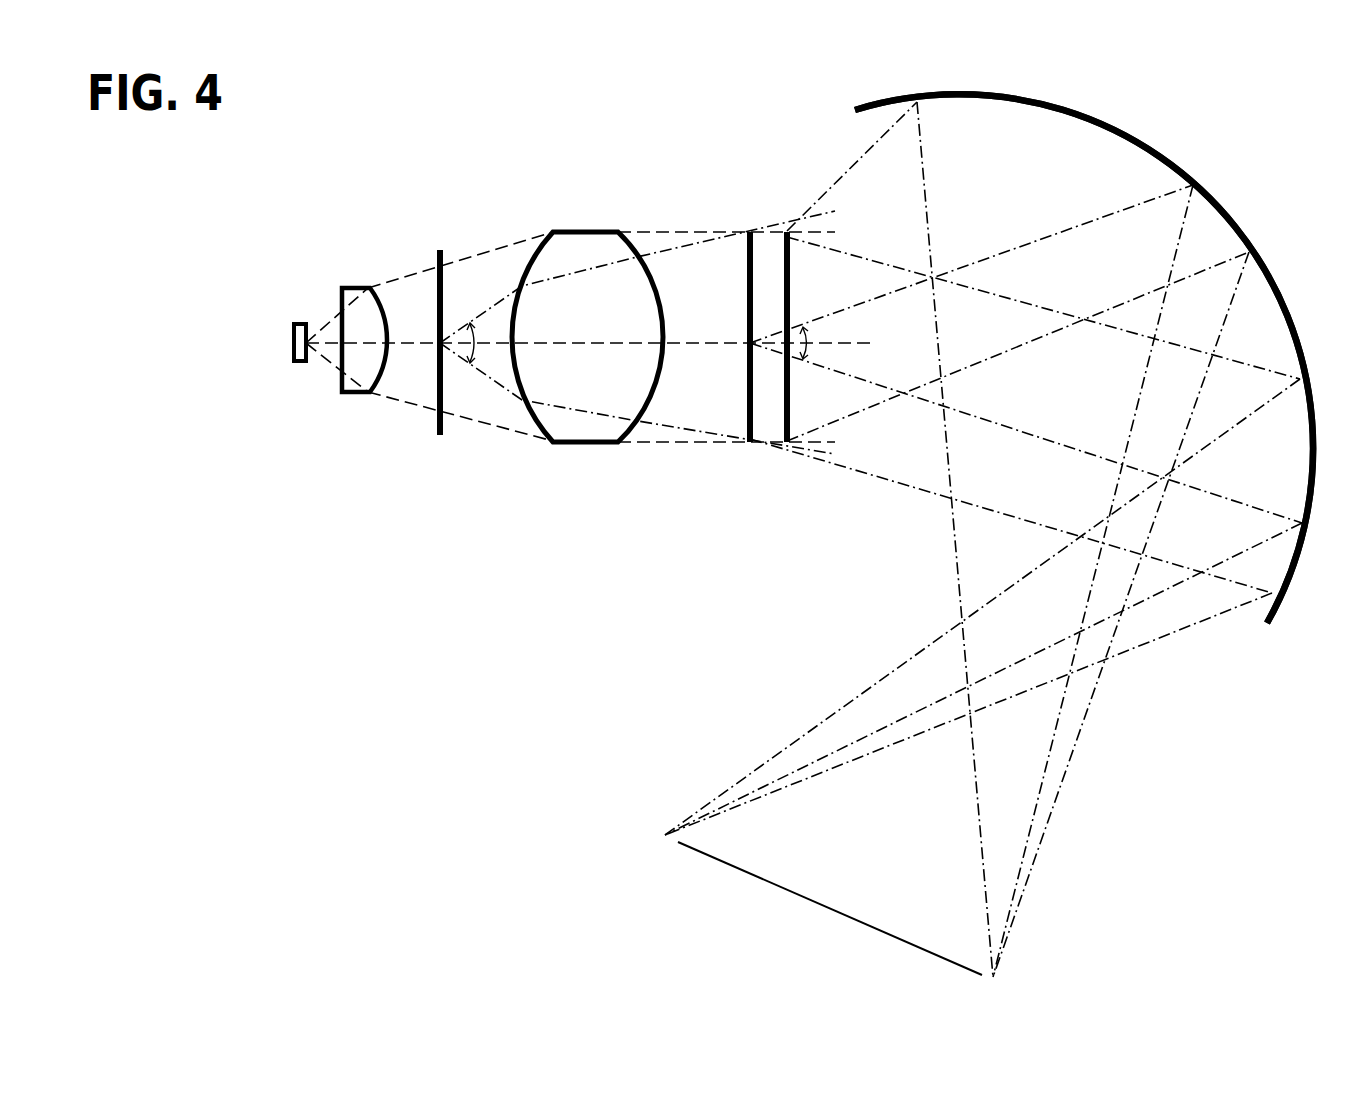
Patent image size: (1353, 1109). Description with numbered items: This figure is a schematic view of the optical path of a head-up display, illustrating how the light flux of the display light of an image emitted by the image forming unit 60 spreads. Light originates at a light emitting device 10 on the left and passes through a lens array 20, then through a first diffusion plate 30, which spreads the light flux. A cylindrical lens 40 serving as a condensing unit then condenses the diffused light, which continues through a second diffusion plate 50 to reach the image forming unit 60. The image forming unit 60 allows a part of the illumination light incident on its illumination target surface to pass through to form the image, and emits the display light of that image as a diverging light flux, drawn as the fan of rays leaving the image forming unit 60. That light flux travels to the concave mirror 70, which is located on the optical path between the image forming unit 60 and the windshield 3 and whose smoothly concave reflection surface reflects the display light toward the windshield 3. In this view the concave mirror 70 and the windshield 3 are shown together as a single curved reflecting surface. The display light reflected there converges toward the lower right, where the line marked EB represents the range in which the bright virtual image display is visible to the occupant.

The light emitting device 10 is at (300, 322).
The lens array 20 is at (352, 287).
The first diffusion plate 30 is at (440, 250).
The cylindrical lens 40 is at (586, 231).
The second diffusion plate 50 is at (748, 231).
The image forming unit 60 is at (787, 231).
The concave mirror 70 is at (1143, 147).
The windshield 3 is at (1084, 358).
The range EB is at (745, 872).